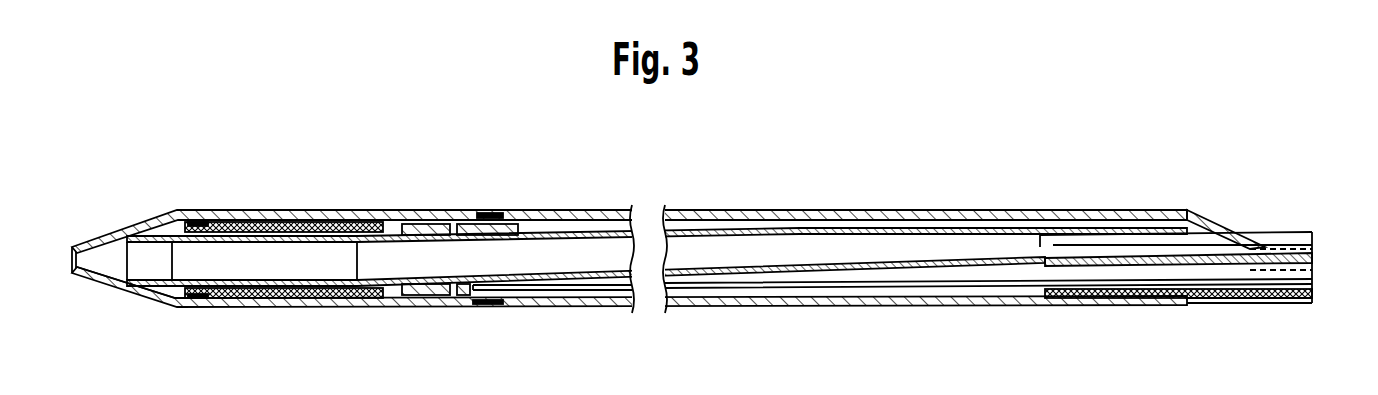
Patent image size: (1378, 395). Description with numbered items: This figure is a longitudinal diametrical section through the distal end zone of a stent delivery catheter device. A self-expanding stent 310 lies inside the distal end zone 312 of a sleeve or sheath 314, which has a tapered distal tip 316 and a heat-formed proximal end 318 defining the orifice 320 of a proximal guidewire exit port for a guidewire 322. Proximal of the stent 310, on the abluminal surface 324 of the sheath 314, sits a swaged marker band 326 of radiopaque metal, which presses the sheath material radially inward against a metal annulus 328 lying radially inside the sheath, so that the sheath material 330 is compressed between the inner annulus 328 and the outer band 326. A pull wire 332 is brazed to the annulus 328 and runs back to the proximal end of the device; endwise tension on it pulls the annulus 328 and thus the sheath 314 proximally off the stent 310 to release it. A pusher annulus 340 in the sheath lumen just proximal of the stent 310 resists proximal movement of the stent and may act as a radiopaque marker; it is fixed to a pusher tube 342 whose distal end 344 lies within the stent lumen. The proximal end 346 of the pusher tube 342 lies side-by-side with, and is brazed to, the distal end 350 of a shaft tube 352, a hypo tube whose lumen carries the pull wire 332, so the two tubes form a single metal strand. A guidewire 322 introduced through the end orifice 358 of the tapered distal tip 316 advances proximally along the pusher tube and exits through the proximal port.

The self-expanding stent 310 is at (297, 226).
The distal end zone 312 is at (292, 310).
The sheath 314 is at (602, 310).
The tapered distal tip 316 is at (106, 283).
The heat-formed proximal end 318 is at (1205, 228).
The orifice 320 is at (1250, 245).
The guidewire 322 is at (1295, 240).
The abluminal surface 324 is at (612, 212).
The swaged marker band 326 is at (483, 224).
The metal annulus 328 is at (470, 303).
The sheath material 330 is at (505, 213).
The pull wire 332 is at (855, 285).
The pusher annulus 340 is at (428, 226).
The pusher tube 342 is at (765, 230).
The distal end of pusher tube 344 is at (357, 280).
The proximal end of pusher tube 346 is at (1177, 228).
The distal end of shaft tube 350 is at (1050, 300).
The shaft tube 352 is at (1315, 302).
The end orifice of tapered distal tip 358 is at (72, 248).